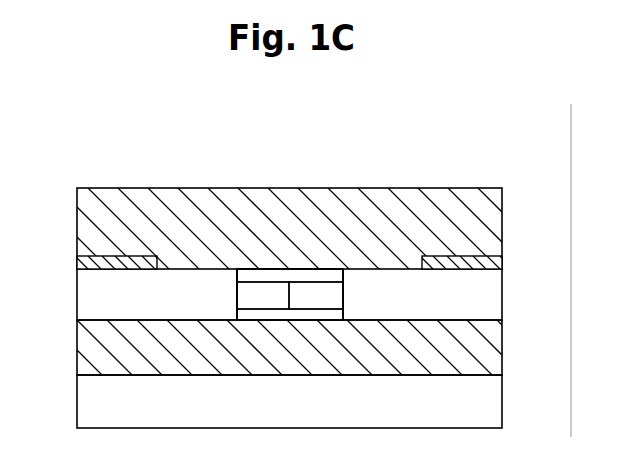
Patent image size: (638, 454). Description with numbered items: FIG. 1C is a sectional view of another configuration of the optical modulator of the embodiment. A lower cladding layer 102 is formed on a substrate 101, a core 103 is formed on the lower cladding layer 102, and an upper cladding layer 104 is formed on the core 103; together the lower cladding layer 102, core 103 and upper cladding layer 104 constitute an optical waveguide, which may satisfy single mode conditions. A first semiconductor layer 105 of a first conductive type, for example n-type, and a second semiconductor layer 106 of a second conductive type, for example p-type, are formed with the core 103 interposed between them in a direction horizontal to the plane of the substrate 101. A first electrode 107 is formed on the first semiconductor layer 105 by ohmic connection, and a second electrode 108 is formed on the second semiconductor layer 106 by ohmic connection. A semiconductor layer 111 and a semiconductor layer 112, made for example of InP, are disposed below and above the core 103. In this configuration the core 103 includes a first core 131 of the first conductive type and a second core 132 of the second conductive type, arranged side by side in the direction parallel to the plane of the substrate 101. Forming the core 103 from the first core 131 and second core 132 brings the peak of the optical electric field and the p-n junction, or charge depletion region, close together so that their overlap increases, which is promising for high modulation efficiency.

The substrate 101 is at (502, 401).
The lower cladding layer 102 is at (502, 348).
The core 103 is at (348, 157).
The upper cladding layer 104 is at (502, 222).
The first semiconductor layer 105 is at (77, 296).
The second semiconductor layer 106 is at (502, 296).
The first electrode 107 is at (77, 262).
The second electrode 108 is at (502, 262).
The semiconductor layer 111 is at (243, 312).
The semiconductor layer 112 is at (332, 278).
The first core 131 is at (257, 290).
The second core 132 is at (320, 290).